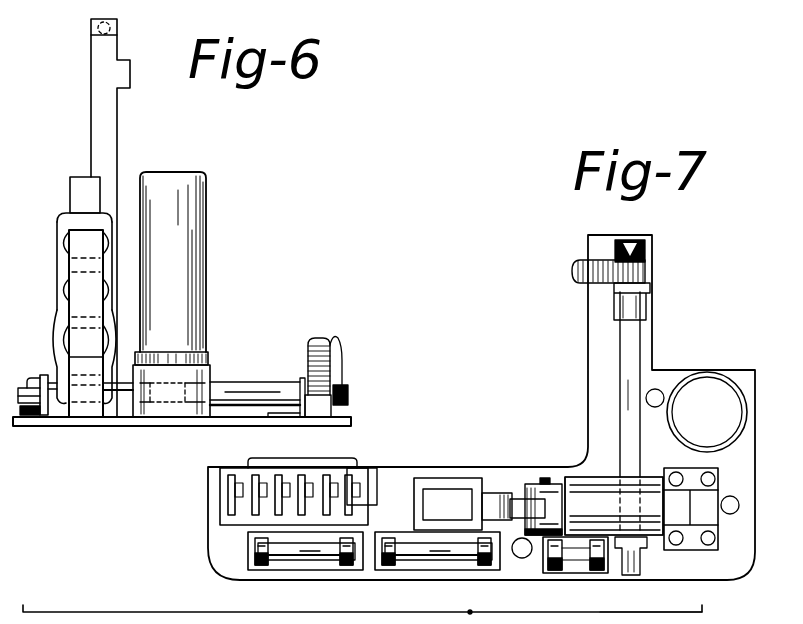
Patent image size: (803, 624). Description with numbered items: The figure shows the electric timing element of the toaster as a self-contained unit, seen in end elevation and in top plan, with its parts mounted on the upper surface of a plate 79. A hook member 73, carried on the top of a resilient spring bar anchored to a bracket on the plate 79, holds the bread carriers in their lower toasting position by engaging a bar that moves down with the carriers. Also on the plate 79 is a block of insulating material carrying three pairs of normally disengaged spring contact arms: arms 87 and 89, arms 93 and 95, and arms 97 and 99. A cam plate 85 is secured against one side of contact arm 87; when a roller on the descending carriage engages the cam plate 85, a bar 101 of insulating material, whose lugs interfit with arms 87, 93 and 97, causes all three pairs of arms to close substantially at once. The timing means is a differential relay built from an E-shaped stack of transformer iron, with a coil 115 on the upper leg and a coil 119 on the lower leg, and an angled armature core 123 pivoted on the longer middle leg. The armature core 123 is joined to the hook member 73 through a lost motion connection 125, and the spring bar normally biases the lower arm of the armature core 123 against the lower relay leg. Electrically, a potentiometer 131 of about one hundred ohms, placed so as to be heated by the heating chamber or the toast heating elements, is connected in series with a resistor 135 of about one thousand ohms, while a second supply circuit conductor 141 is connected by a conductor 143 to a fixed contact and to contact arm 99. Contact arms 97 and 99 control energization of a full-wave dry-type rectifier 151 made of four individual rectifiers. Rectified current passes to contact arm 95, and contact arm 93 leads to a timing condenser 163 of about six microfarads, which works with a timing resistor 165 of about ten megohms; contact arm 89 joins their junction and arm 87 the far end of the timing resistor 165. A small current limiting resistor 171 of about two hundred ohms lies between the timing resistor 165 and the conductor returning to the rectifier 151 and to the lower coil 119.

In FIG. 7, the hook member 73 is at (493, 493).
In FIG. 6, the plate 79 is at (351, 417).
In FIG. 7, the plate 79 is at (400, 467).
In FIG. 7, the cam plate 85 is at (377, 492).
In FIG. 7, the spring contact arm 87 is at (348, 478).
In FIG. 7, the spring contact arm 89 is at (324, 478).
In FIG. 7, the spring contact arm 93 is at (299, 478).
In FIG. 7, the spring contact arm 95 is at (276, 478).
In FIG. 7, the spring contact arm 97 is at (252, 478).
In FIG. 7, the spring contact arm 99 is at (242, 475).
In FIG. 7, the bar of electric-insulating material 101 is at (366, 444).
In FIG. 6, the coil 115 is at (58, 222).
In FIG. 7, the coil 115 is at (596, 477).
In FIG. 6, the coil 119 is at (53, 338).
In FIG. 7, the armature core 123 is at (566, 492).
In FIG. 7, the lost motion connection 125 is at (520, 494).
In FIG. 6, the potentiometer 131 is at (318, 338).
In FIG. 7, the potentiometer 131 is at (569, 270).
In FIG. 7, the resistor 135 is at (302, 560).
In FIG. 7, the second supply circuit conductor 141 is at (27, 607).
In FIG. 7, the conductor 143 is at (642, 610).
In FIG. 7, the full-wave dry-type rectifier 151 is at (446, 490).
In FIG. 6, the timing condenser 163 is at (187, 166).
In FIG. 7, the timing condenser 163 is at (703, 388).
In FIG. 7, the timing resistor 165 is at (428, 560).
In FIG. 7, the current limiting resistor 171 is at (580, 571).